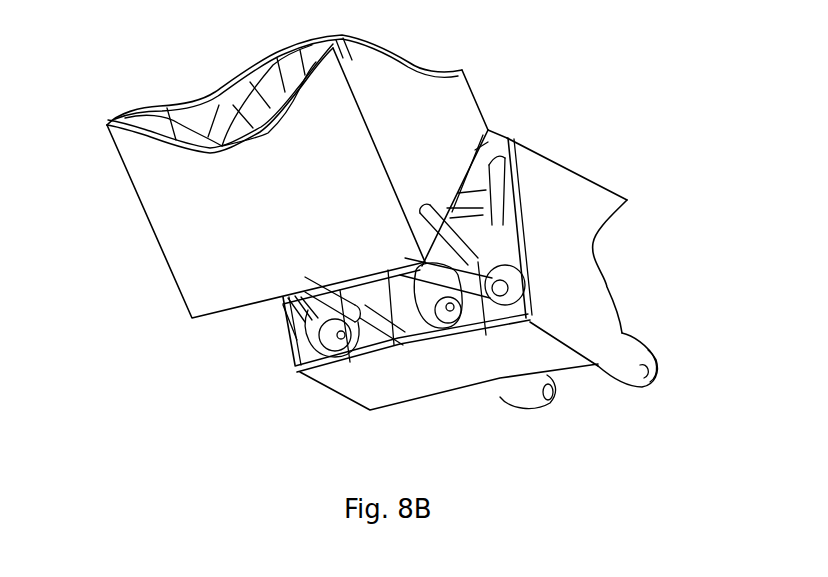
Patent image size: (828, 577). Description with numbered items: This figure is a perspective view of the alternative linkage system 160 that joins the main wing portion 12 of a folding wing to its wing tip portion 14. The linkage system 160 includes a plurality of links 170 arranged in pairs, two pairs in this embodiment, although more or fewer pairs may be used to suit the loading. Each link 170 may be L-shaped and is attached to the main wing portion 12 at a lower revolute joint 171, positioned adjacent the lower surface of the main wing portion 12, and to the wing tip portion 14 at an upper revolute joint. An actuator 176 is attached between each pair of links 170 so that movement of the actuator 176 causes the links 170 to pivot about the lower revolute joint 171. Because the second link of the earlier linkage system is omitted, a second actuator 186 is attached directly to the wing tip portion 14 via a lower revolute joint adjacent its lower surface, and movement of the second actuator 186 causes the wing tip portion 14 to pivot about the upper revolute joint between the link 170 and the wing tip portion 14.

The main wing portion 12 is at (580, 194).
The wing tip portion 14 is at (195, 222).
The linkage system 160 is at (219, 404).
The link 170 is at (293, 323).
The lower revolute joint 171 is at (343, 360).
The actuator 176 is at (484, 140).
The second actuator 186 is at (520, 395).